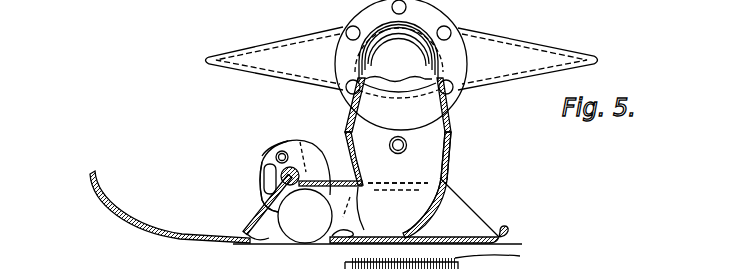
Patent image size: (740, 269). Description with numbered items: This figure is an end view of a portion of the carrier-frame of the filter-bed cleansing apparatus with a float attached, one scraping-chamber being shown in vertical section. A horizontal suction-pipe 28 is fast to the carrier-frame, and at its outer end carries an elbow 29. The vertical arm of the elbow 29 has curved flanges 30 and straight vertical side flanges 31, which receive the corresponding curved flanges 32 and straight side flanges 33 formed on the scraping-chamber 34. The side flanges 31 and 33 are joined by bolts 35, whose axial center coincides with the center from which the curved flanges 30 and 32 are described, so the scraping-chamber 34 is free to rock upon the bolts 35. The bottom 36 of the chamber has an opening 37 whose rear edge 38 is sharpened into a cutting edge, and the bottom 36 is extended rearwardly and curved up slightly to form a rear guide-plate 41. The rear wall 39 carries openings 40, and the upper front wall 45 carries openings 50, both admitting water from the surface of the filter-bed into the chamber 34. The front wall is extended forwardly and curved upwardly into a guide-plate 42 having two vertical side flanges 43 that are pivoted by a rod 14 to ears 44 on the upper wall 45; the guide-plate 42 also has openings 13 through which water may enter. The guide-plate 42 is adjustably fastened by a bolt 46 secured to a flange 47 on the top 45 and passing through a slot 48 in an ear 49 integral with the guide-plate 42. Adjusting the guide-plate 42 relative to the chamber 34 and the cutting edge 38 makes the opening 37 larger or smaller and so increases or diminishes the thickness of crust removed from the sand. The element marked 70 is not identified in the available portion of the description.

The openings 13 is at (294, 190).
The rod 14 is at (298, 145).
The horizontal suction-pipe 28 is at (440, 60).
The elbow 29 is at (451, 32).
The curved flanges 30 is at (347, 126).
The straight vertical side flanges 31 is at (446, 146).
The curved flanges 32 is at (449, 168).
The straight side flanges 33 is at (372, 151).
The scraping-chamber 34 is at (398, 185).
The bolts 35 is at (399, 154).
The bottom 36 is at (347, 235).
The opening 37 is at (270, 245).
The rear edge 38 is at (305, 216).
The rear wall 39 is at (446, 190).
The openings 40 is at (430, 218).
The rear guide-plate 41 is at (516, 233).
The guide-plate 42 is at (113, 200).
The vertical side flanges 43 is at (246, 232).
The ears 44 is at (303, 176).
The upper wall 45 is at (330, 178).
The bolt 46 is at (282, 151).
The flange 47 is at (262, 156).
The slot 48 is at (262, 180).
The ear 49 is at (262, 196).
The openings 50 is at (342, 212).
The wings 70 is at (258, 60).